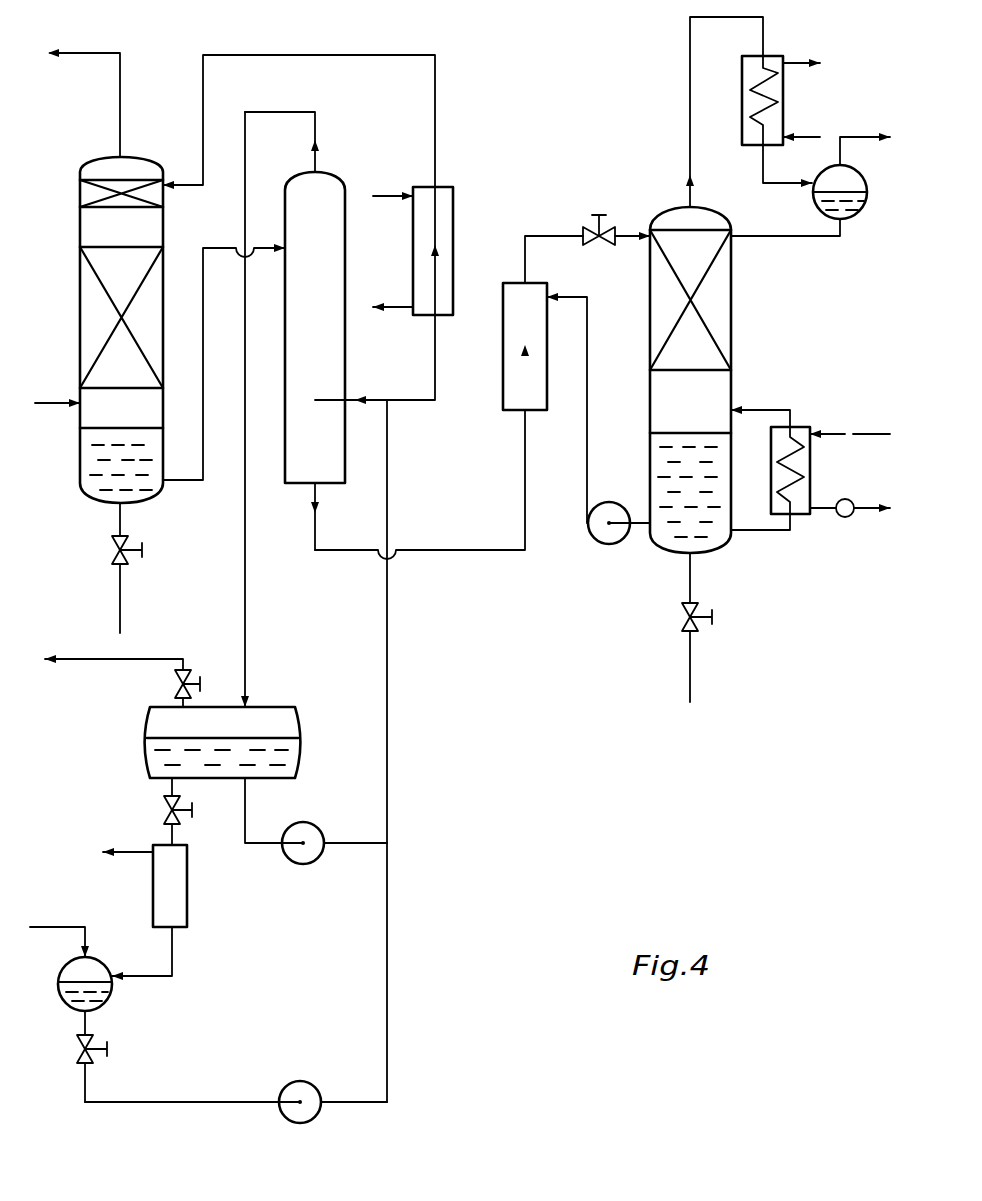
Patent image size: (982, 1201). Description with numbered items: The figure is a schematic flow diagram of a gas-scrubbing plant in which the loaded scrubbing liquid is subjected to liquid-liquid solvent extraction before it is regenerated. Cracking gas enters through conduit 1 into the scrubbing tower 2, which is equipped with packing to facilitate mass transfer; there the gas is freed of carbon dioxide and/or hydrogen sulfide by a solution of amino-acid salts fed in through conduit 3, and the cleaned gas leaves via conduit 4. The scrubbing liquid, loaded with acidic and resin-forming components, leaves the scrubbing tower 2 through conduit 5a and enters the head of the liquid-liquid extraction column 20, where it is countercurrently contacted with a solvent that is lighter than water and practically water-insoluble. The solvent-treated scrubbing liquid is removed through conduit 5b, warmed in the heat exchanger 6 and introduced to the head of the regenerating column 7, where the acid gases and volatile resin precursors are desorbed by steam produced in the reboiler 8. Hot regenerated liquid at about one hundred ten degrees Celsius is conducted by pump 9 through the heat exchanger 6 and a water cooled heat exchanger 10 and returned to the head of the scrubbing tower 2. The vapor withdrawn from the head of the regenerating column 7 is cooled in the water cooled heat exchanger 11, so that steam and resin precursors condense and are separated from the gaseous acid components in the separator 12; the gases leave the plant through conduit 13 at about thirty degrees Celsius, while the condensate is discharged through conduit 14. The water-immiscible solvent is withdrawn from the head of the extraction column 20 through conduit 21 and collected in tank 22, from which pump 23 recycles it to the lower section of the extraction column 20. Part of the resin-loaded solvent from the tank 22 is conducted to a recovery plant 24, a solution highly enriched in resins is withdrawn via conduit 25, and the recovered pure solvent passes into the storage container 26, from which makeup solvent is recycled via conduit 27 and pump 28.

The conduit 1 is at (50, 405).
The scrubbing tower 2 is at (163, 222).
The conduit 3 is at (335, 55).
The conduit 4 is at (95, 37).
The conduit 5a is at (188, 483).
The conduit 5b is at (478, 553).
The heat exchanger 6 is at (503, 372).
The regenerating column 7 is at (733, 332).
The reboiler 8 is at (812, 463).
The pump 9 is at (605, 547).
The water cooled heat exchanger 10 is at (455, 215).
The water cooled heat exchanger 11 is at (785, 92).
The separator 12 is at (862, 213).
The conduit 13 is at (853, 137).
The conduit 14 is at (797, 240).
The liquid-liquid extraction column 20 is at (345, 372).
The conduit 21 is at (245, 627).
The tank 22 is at (295, 718).
The pump 23 is at (297, 867).
The recovery plant 24 is at (188, 917).
The conduit 25 is at (128, 857).
The storage container 26 is at (110, 1003).
The conduit 27 is at (198, 1105).
The pump 28 is at (322, 1115).